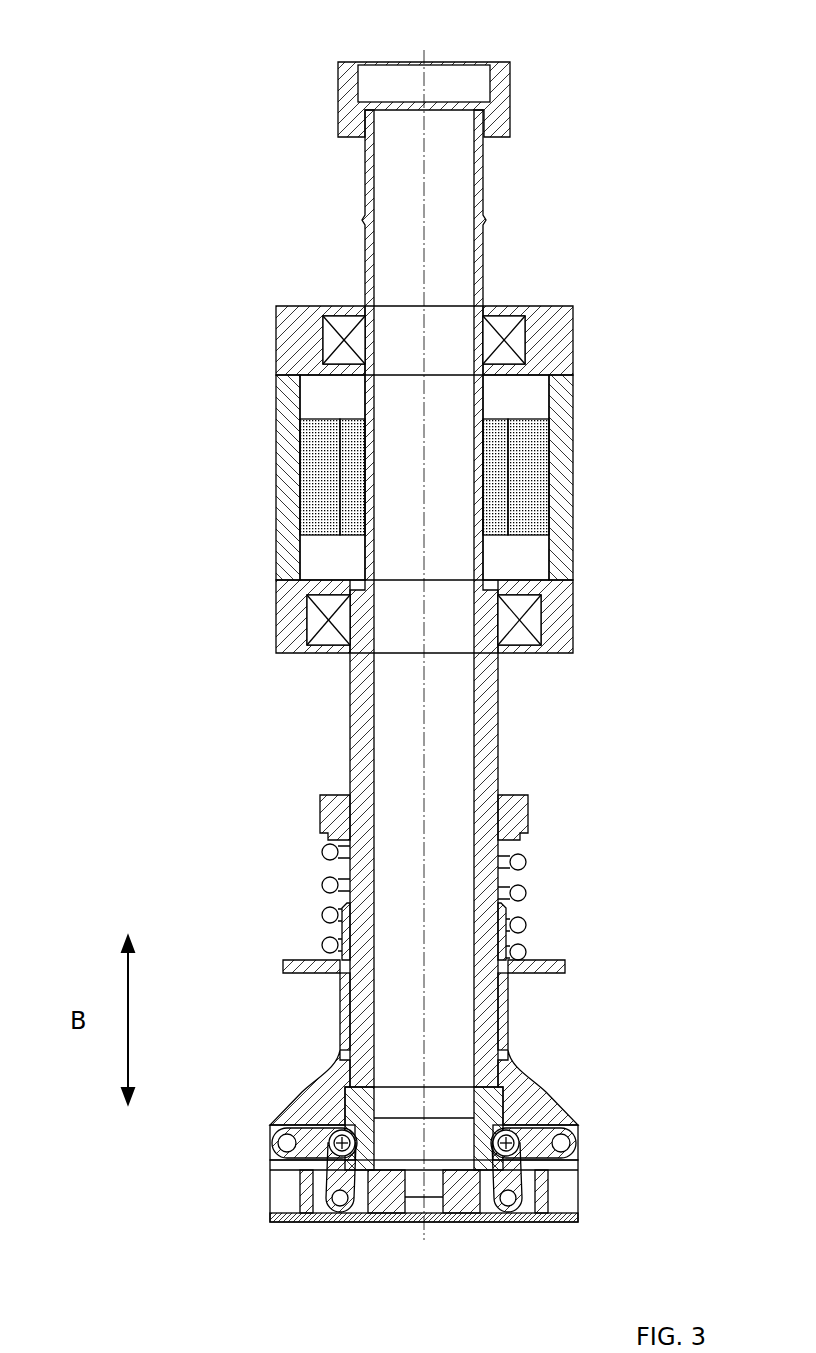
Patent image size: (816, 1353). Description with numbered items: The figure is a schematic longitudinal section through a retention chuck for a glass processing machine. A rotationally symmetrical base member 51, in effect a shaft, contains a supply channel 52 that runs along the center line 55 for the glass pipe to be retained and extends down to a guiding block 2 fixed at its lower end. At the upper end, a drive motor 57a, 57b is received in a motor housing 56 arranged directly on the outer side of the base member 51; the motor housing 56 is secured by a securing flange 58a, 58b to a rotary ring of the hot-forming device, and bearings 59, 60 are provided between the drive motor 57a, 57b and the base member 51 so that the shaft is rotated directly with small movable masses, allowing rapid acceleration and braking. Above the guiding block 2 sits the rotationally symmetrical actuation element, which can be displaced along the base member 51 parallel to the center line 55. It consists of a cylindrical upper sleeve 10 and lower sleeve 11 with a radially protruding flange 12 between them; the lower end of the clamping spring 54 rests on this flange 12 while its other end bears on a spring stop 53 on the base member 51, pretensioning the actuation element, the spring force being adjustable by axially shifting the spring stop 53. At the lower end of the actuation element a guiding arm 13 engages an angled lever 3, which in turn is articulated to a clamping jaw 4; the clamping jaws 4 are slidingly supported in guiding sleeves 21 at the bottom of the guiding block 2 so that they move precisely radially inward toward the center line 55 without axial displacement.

The center line 55 is at (423, 88).
The supply channel 52 is at (452, 192).
The base member 51 is at (482, 266).
The bearing 59 is at (518, 338).
The securing flange 58a is at (562, 347).
The motor housing 56 is at (560, 410).
The drive motor 57b is at (494, 487).
The drive motor 57a is at (520, 512).
The bearing 60 is at (533, 608).
The securing flange 58b is at (562, 635).
The spring stop 53 is at (517, 813).
The clamping spring 54 is at (518, 895).
The upper sleeve 10 is at (503, 945).
The flange 12 is at (562, 968).
The lower sleeve 11 is at (502, 1030).
The guiding block 2 is at (486, 1108).
The guiding arm 13 is at (557, 1117).
The angled lever 3 is at (330, 1148).
The guiding sleeve 21 is at (313, 1225).
The clamping jaw 4 is at (392, 1202).